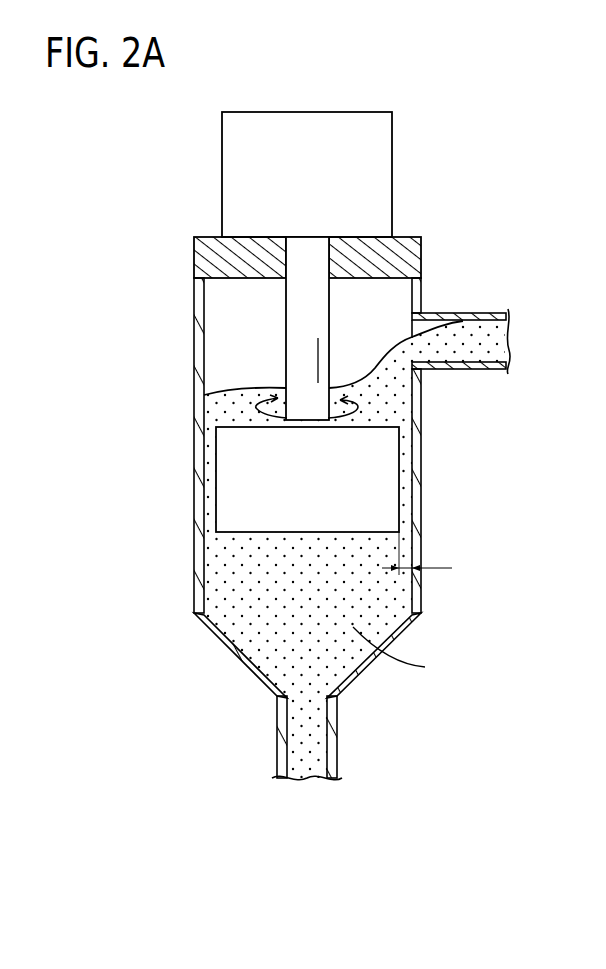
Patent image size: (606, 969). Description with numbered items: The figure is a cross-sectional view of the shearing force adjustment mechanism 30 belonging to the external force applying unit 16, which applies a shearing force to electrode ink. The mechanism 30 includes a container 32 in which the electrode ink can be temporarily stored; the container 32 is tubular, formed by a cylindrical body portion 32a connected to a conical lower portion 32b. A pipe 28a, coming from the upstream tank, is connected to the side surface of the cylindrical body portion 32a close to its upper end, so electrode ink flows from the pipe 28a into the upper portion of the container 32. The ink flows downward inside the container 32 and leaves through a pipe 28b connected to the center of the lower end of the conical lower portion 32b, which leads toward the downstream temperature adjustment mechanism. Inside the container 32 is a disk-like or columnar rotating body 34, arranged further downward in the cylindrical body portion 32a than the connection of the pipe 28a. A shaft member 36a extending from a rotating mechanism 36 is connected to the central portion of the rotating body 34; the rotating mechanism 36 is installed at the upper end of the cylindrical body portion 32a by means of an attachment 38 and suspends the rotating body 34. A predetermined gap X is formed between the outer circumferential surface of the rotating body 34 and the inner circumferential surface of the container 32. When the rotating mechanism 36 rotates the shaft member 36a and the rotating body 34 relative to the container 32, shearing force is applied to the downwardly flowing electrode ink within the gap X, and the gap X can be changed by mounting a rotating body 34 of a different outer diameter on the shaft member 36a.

The shearing force adjustment mechanism 30 is at (77, 143).
The external force applying unit 16 is at (113, 143).
The rotating mechanism 36 is at (313, 111).
The attachment 38 is at (407, 242).
The shaft member 36a is at (298, 322).
The pipe 28a is at (453, 315).
The rotating body 34 is at (387, 490).
The gap X is at (417, 556).
The container 32 is at (245, 488).
The cylindrical body portion 32a is at (193, 588).
The conical lower portion 32b is at (212, 637).
The pipe 28b is at (337, 744).